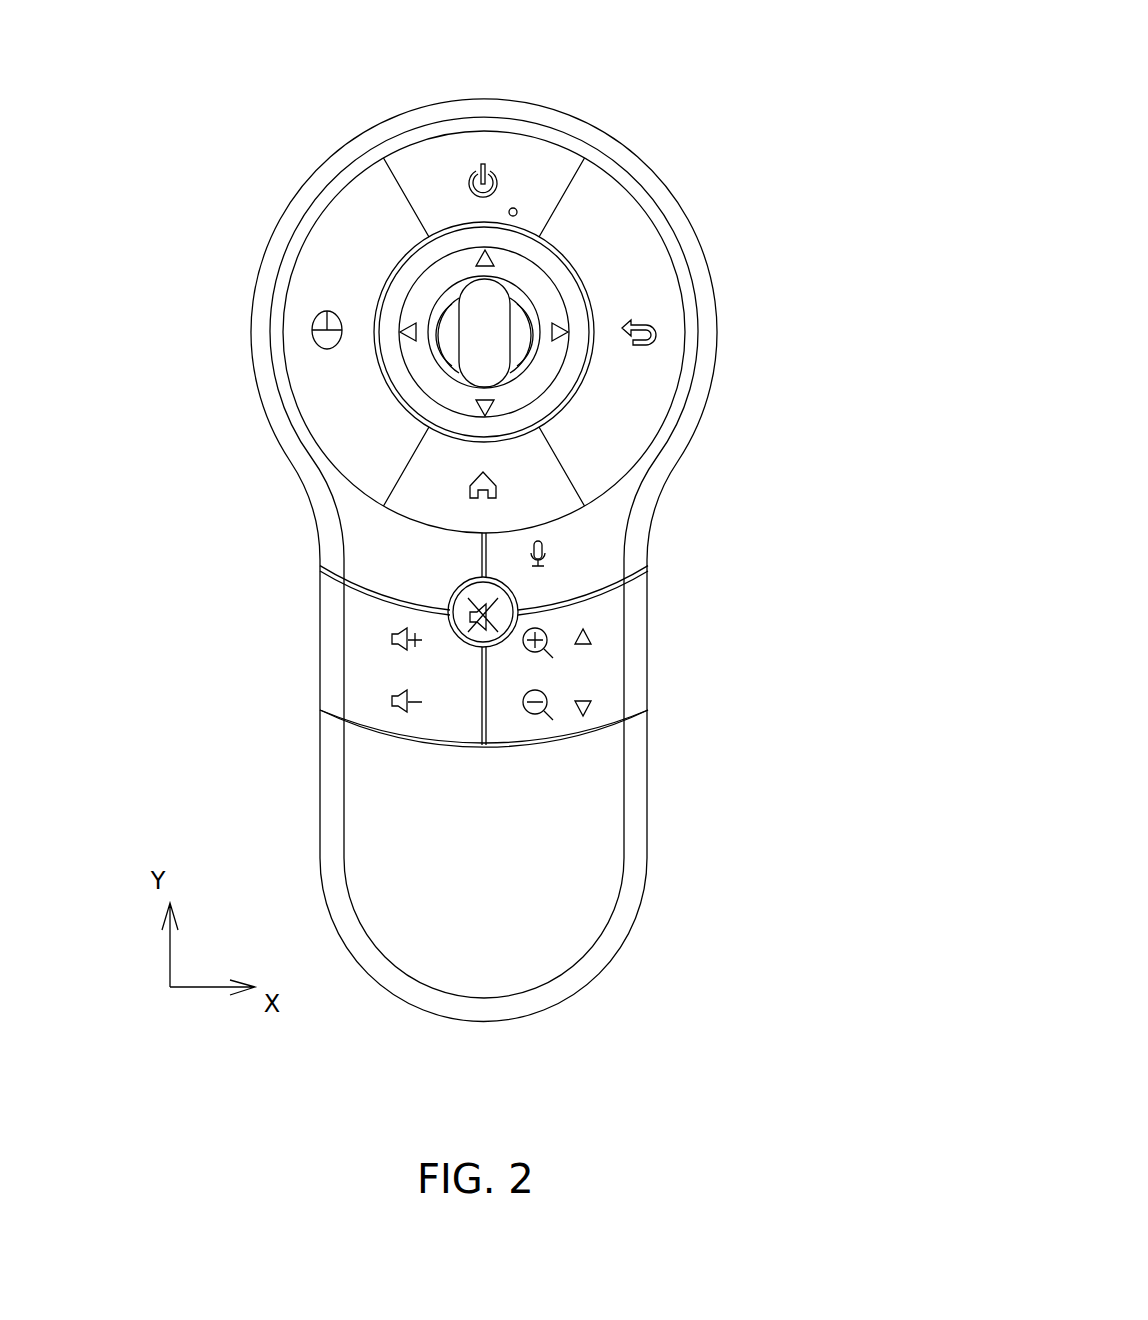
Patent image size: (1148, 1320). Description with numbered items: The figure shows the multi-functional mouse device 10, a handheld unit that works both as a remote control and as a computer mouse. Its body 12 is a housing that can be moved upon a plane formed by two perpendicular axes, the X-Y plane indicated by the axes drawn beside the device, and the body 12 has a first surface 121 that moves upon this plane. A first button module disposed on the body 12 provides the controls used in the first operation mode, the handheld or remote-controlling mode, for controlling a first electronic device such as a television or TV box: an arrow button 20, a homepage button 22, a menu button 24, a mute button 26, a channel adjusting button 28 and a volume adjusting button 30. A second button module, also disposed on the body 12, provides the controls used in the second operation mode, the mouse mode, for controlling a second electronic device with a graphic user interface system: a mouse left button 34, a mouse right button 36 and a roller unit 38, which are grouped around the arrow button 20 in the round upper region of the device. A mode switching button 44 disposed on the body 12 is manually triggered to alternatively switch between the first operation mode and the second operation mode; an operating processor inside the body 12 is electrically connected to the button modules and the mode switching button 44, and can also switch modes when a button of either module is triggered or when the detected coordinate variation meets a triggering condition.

The multi-functional mouse device 10 is at (708, 95).
The body 12 is at (632, 900).
The first surface 121 is at (575, 836).
The arrow button 20 is at (413, 310).
The homepage button 22 is at (548, 487).
The menu button 24 is at (617, 537).
The mute button 26 is at (452, 600).
The channel adjusting button 28 is at (602, 665).
The volume adjusting button 30 is at (375, 672).
The mouse left button 34 is at (352, 397).
The mouse right button 36 is at (663, 287).
The roller unit 38 is at (488, 347).
The mode switching button 44 is at (367, 533).